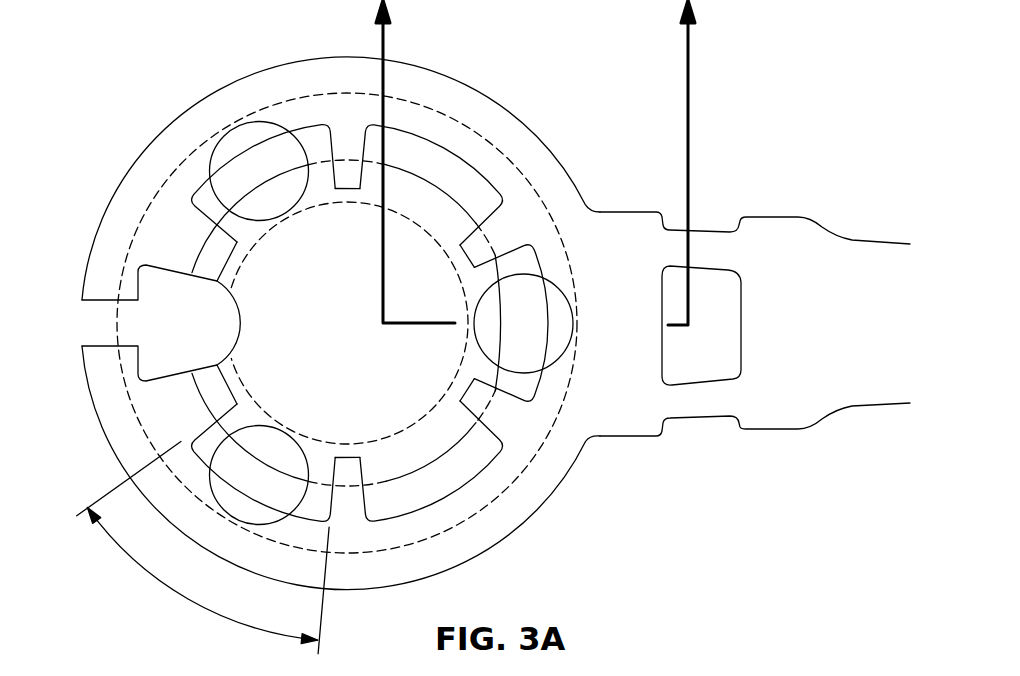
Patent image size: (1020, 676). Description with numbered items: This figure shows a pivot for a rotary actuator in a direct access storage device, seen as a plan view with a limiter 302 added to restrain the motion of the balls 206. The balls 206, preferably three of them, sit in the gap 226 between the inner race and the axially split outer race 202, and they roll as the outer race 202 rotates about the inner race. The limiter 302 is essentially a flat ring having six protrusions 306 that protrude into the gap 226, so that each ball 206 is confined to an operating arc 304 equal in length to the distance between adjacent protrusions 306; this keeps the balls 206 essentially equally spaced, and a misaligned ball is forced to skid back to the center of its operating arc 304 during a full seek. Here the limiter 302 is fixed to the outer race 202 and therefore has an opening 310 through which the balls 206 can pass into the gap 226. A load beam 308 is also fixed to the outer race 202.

The outer race 202 is at (548, 498).
The balls 206 is at (287, 457).
The gap 226 is at (197, 203).
The limiter 302 is at (193, 192).
The operating arc 304 is at (200, 610).
The protrusions 306 is at (345, 180).
The load beam 308 is at (875, 398).
The opening 310 is at (213, 311).